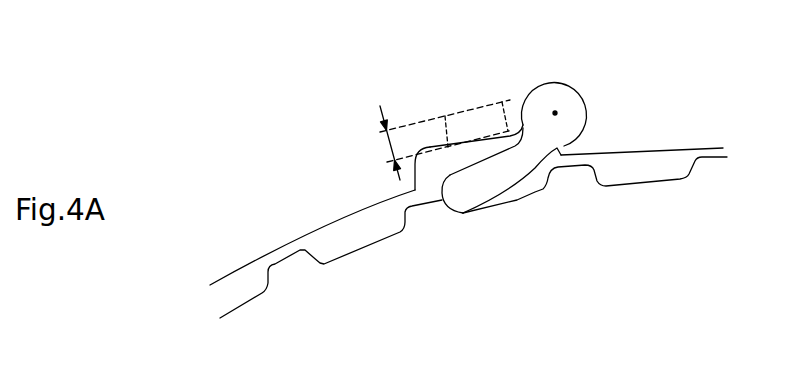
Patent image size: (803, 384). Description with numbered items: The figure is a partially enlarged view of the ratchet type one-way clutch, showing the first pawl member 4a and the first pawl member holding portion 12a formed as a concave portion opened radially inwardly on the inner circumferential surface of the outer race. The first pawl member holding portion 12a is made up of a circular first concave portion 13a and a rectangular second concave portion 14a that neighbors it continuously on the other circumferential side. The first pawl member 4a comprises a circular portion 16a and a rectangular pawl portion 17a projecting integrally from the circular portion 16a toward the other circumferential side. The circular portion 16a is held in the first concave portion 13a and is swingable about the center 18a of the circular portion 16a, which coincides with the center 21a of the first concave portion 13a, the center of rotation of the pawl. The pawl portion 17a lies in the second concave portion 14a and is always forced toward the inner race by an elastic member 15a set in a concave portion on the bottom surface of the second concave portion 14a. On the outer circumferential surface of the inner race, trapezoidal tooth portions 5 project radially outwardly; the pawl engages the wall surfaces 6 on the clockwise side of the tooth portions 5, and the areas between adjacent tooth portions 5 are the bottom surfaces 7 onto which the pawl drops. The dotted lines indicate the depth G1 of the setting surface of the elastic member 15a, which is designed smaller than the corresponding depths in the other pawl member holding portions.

The first pawl member 4a is at (512, 237).
The tooth portions 5 is at (290, 268).
The wall surfaces 6 is at (473, 210).
The bottom surfaces 7 is at (468, 241).
The first pawl member holding portion 12a is at (433, 185).
The first concave portion 13a is at (619, 94).
The second concave portion 14a is at (411, 183).
The elastic member 15a is at (481, 145).
The circular portion 16a is at (577, 122).
The pawl portion 17a is at (488, 186).
The center 18a is at (541, 64).
The center 21a is at (555, 113).
The depth G1 is at (426, 140).